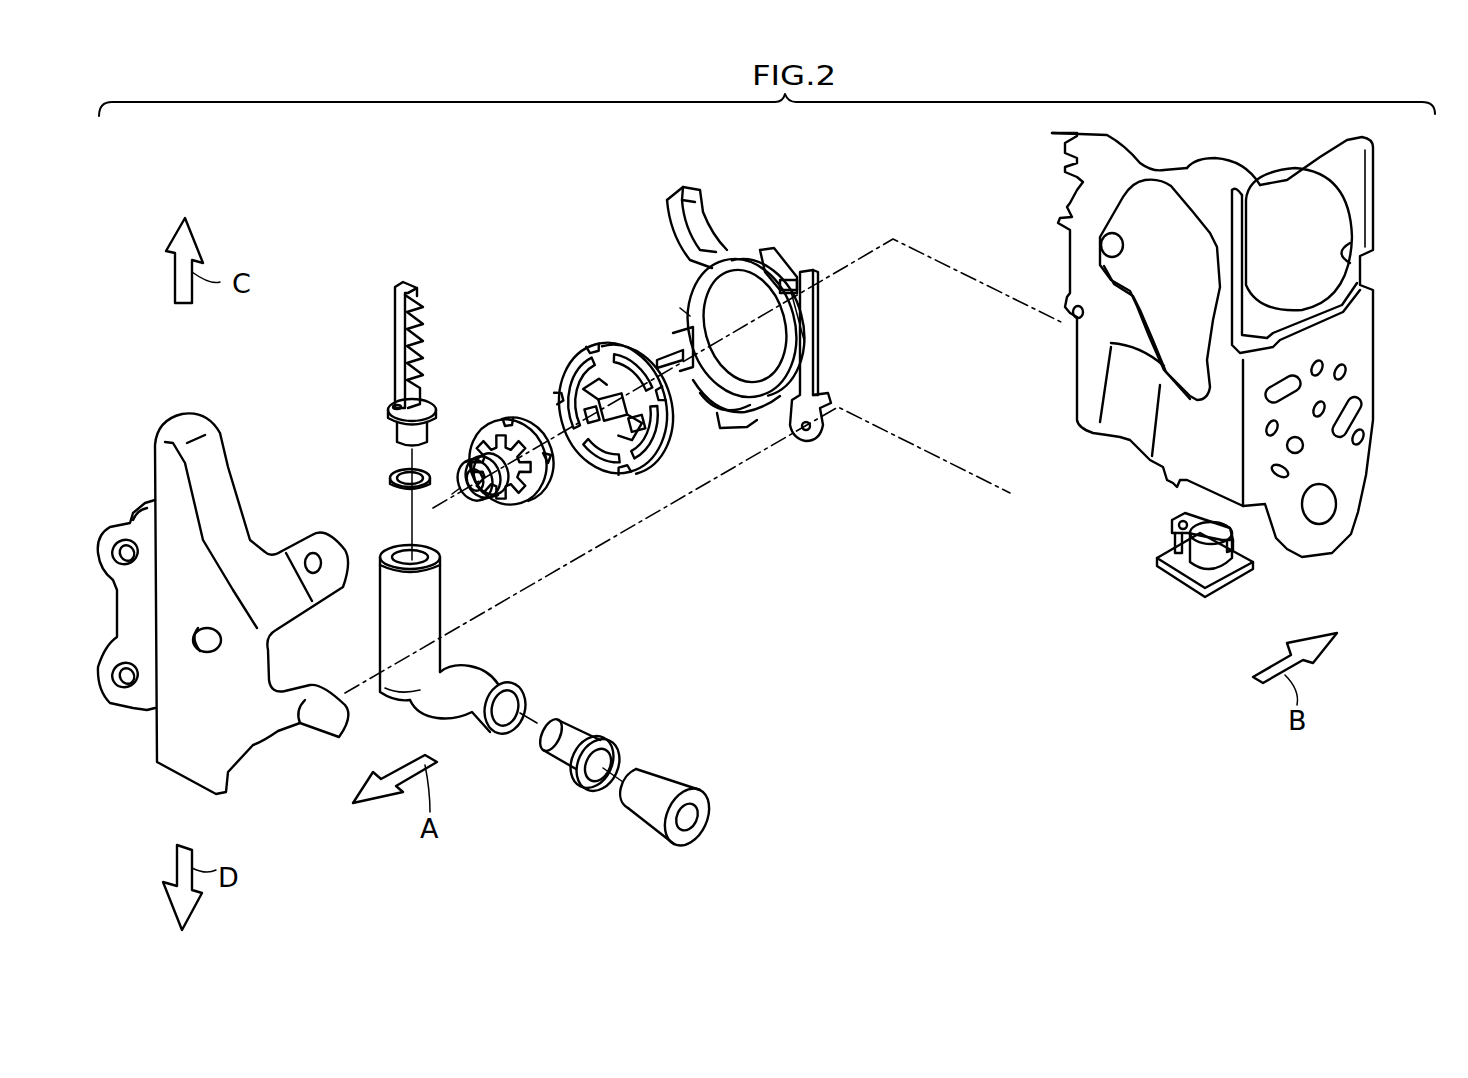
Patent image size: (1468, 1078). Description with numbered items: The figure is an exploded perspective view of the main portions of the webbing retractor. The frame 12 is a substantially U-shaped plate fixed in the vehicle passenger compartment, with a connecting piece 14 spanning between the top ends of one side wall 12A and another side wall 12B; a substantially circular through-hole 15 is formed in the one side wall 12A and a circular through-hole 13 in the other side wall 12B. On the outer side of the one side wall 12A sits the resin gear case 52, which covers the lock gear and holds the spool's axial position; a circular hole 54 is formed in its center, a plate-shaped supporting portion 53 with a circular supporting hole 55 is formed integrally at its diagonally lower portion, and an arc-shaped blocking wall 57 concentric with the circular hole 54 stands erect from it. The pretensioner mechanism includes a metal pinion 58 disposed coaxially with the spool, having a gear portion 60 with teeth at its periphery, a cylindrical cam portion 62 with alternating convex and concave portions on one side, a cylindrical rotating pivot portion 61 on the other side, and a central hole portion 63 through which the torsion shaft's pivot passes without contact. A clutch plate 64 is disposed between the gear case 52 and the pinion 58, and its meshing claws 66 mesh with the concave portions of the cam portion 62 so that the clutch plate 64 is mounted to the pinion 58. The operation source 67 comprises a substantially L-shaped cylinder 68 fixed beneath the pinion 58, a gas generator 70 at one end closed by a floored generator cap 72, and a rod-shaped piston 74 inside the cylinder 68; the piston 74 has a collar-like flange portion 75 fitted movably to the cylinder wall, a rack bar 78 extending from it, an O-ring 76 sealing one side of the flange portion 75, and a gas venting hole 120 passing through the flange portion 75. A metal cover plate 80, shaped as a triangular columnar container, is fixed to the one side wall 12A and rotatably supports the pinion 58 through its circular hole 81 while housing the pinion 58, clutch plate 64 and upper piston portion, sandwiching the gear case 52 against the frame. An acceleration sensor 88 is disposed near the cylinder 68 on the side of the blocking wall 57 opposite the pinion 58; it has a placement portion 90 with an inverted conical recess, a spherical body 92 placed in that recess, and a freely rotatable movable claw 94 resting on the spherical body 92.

The frame 12 is at (1221, 332).
The one side wall 12A is at (1119, 343).
The another side wall 12B is at (1362, 195).
The circular through-hole 13 is at (1356, 270).
The connecting piece 14 is at (1230, 176).
The substantially circular through-hole 15 is at (1100, 253).
The gear case 52 is at (793, 246).
The supporting portion 53 is at (833, 425).
The circular hole 54 is at (762, 335).
The supporting hole 55 is at (806, 431).
The blocking wall 57 is at (722, 402).
The pinion 58 is at (521, 452).
The gear portion 60 is at (505, 500).
The rotating pivot portion 61 is at (468, 472).
The cam portion 62 is at (548, 462).
The hole portion 63 is at (460, 495).
The clutch plate 64 is at (601, 381).
The meshing claws 66 is at (595, 398).
The operation source 67 is at (455, 691).
The cylinder 68 is at (487, 667).
The gas generator 70 is at (578, 730).
The generator cap 72 is at (676, 768).
The piston 74 is at (396, 410).
The flange portion 75 is at (388, 428).
The O-ring 76 is at (390, 480).
The rack bar 78 is at (425, 315).
The cover plate 80 is at (223, 582).
The circular hole 81 is at (240, 645).
The acceleration sensor 88 is at (1209, 583).
The placement portion 90 is at (1163, 570).
The spherical body 92 is at (1212, 585).
The movable claw 94 is at (1240, 545).
The gas venting hole 120 is at (395, 408).